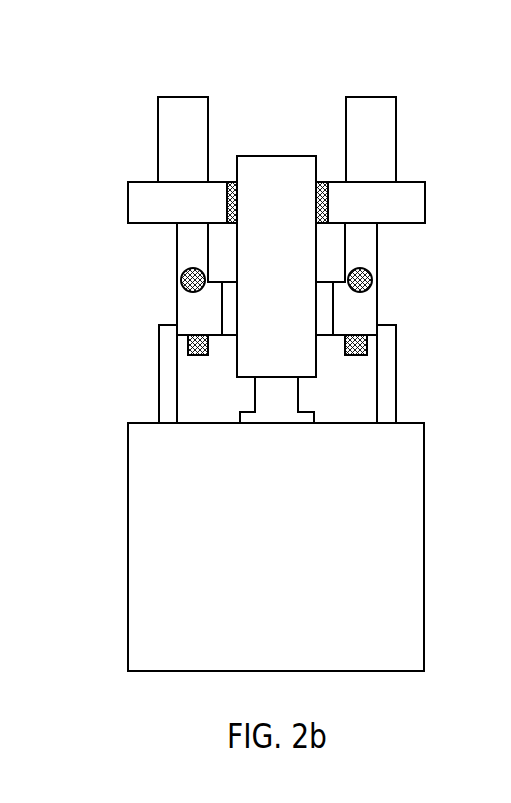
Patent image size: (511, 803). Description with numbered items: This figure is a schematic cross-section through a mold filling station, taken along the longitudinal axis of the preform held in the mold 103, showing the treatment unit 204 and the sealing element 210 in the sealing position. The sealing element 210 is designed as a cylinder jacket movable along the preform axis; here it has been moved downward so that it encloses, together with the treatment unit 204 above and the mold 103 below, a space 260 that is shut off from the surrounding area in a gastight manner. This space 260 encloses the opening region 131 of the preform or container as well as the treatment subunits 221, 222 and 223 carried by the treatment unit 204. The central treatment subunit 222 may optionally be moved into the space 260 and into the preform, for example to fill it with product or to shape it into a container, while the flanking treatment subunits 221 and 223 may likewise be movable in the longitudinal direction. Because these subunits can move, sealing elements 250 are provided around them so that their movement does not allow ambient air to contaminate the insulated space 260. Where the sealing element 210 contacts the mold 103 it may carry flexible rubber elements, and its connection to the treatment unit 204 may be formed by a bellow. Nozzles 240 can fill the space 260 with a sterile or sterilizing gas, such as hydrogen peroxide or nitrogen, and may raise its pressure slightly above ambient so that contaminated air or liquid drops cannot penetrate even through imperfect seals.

The treatment unit 204 is at (98, 125).
The mold 103 is at (143, 473).
The opening region 131 is at (267, 400).
The sealing element 210 is at (170, 355).
The treatment subunit 221 is at (177, 102).
The treatment subunit 222 is at (292, 156).
The treatment subunit 223 is at (370, 110).
The nozzles 240 is at (355, 355).
The sealing elements 250 is at (227, 205).
The space 260 is at (355, 395).